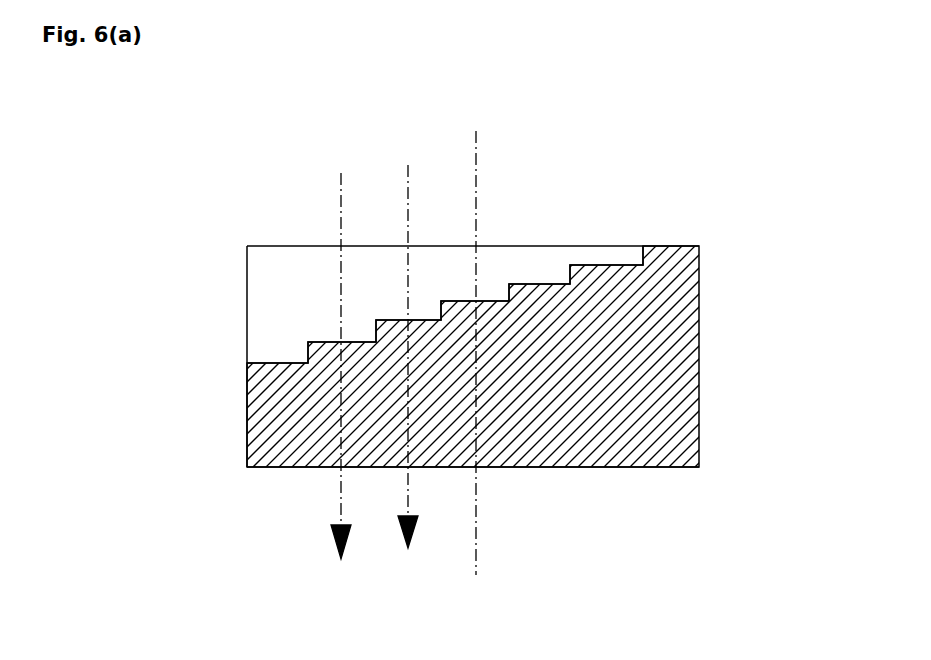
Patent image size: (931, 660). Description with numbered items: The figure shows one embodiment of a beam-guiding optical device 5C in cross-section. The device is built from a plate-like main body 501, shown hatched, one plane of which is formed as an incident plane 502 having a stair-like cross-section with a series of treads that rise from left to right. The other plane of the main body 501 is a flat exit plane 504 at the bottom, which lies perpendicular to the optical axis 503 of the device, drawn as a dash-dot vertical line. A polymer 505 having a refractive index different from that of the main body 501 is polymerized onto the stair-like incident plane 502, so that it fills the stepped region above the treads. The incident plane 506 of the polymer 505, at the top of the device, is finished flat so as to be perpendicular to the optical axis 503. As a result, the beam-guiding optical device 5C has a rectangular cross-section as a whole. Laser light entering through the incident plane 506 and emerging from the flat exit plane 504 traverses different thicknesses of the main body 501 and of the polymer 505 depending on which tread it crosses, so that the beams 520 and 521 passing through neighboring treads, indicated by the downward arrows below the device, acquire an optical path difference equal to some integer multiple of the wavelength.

The plate-like main body 501 is at (700, 300).
The incident plane 502 is at (524, 284).
The optical axis 503 is at (476, 166).
The flat exit plane 504 is at (605, 467).
The polymer 505 is at (247, 293).
The incident plane of the polymer 506 is at (292, 246).
The beam 520 is at (338, 382).
The beam 521 is at (415, 377).
The beam-guiding optical device 5C is at (766, 323).